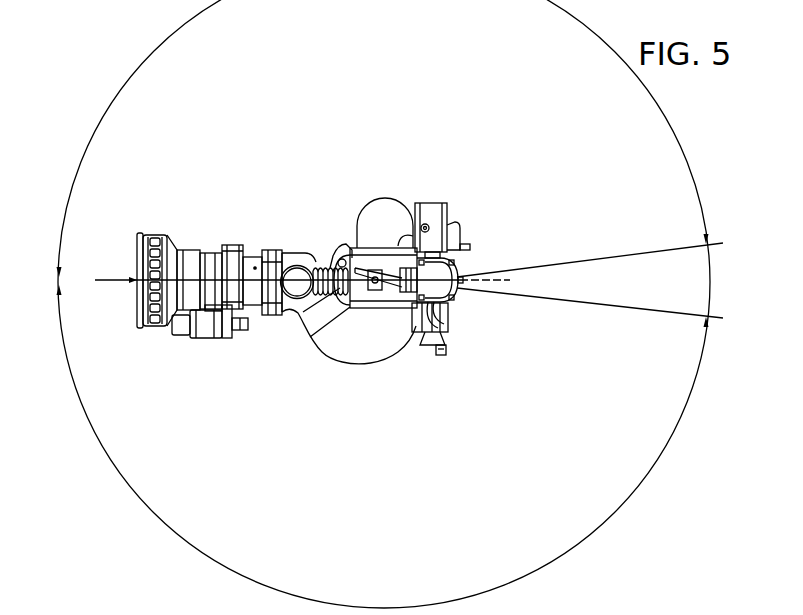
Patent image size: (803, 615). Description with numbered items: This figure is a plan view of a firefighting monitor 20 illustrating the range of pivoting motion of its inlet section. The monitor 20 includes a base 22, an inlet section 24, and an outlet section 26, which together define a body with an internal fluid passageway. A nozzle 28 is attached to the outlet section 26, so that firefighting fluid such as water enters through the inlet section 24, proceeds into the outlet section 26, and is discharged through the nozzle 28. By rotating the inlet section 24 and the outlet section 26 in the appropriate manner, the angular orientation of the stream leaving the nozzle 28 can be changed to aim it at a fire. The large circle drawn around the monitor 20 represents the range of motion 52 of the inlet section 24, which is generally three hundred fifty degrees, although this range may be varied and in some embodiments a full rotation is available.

The firefighting monitor 20 is at (297, 223).
The base 22 is at (343, 247).
The inlet section 24 is at (383, 210).
The outlet section 26 is at (352, 340).
The nozzle 28 is at (170, 240).
The range of motion 52 is at (123, 88).